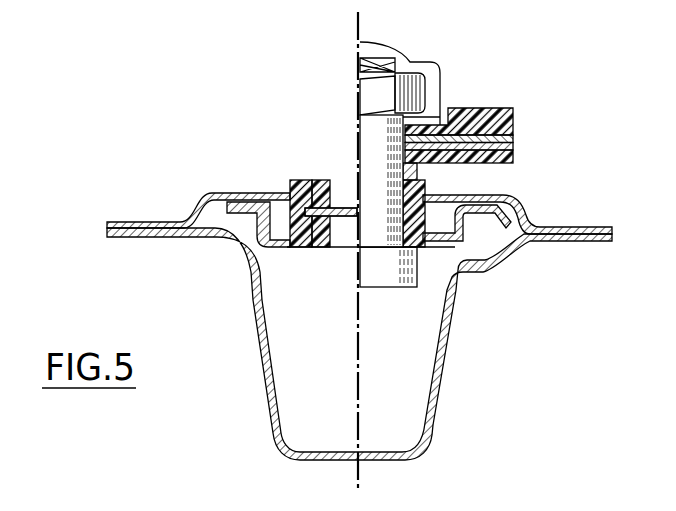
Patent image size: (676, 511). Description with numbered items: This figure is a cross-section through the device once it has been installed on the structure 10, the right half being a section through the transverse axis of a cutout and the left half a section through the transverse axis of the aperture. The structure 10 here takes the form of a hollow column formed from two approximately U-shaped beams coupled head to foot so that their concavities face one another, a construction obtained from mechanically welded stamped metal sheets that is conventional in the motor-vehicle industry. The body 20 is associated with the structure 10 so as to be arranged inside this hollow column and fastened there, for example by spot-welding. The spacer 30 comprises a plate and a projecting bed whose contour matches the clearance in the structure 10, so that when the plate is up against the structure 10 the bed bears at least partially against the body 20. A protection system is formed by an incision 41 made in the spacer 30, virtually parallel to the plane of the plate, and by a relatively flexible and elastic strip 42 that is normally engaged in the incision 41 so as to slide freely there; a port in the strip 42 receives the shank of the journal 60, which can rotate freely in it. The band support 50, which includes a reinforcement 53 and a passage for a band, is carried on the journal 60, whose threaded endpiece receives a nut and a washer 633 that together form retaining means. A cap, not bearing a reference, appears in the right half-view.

The structure 10 is at (520, 213).
The body 20 is at (454, 247).
The spacer 30 is at (321, 247).
The incision 41 is at (308, 180).
The strip 42 is at (347, 208).
The band support 50 is at (502, 114).
The reinforcement 53 is at (516, 142).
The washer 633 is at (415, 165).
The journal 60 is at (382, 280).